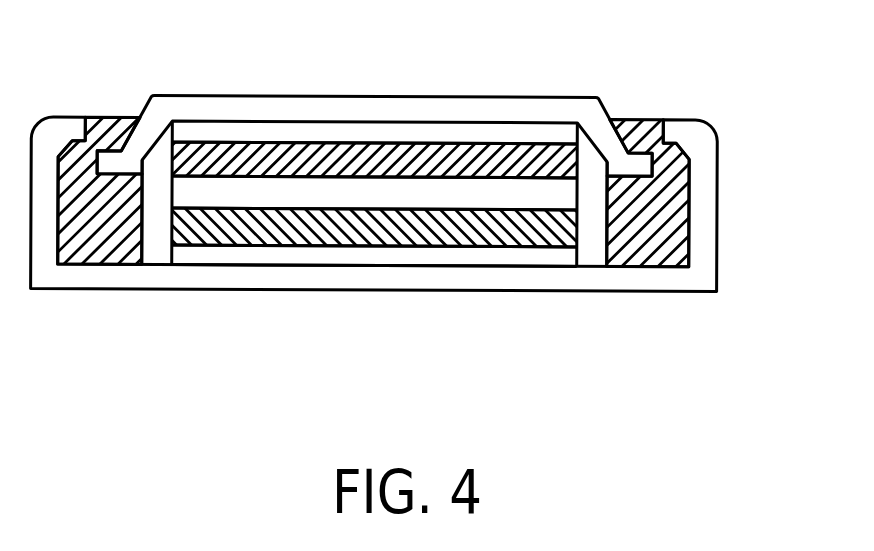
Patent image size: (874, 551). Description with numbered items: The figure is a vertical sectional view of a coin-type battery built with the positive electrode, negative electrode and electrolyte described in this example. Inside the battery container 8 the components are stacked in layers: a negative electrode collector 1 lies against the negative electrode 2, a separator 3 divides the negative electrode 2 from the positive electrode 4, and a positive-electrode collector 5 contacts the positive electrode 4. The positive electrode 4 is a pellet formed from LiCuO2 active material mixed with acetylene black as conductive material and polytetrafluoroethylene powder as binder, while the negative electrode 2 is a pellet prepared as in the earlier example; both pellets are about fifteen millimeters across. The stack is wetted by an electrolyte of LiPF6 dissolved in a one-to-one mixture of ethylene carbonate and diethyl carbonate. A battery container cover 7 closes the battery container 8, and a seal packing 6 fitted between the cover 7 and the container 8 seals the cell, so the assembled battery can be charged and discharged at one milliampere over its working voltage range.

The negative electrode collector 1 is at (553, 131).
The negative electrode 2 is at (573, 160).
The separator 3 is at (560, 197).
The positive electrode 4 is at (573, 227).
The positive-electrode collector 5 is at (540, 260).
The seal packing 6 is at (104, 128).
The battery container cover 7 is at (416, 107).
The battery container 8 is at (355, 280).